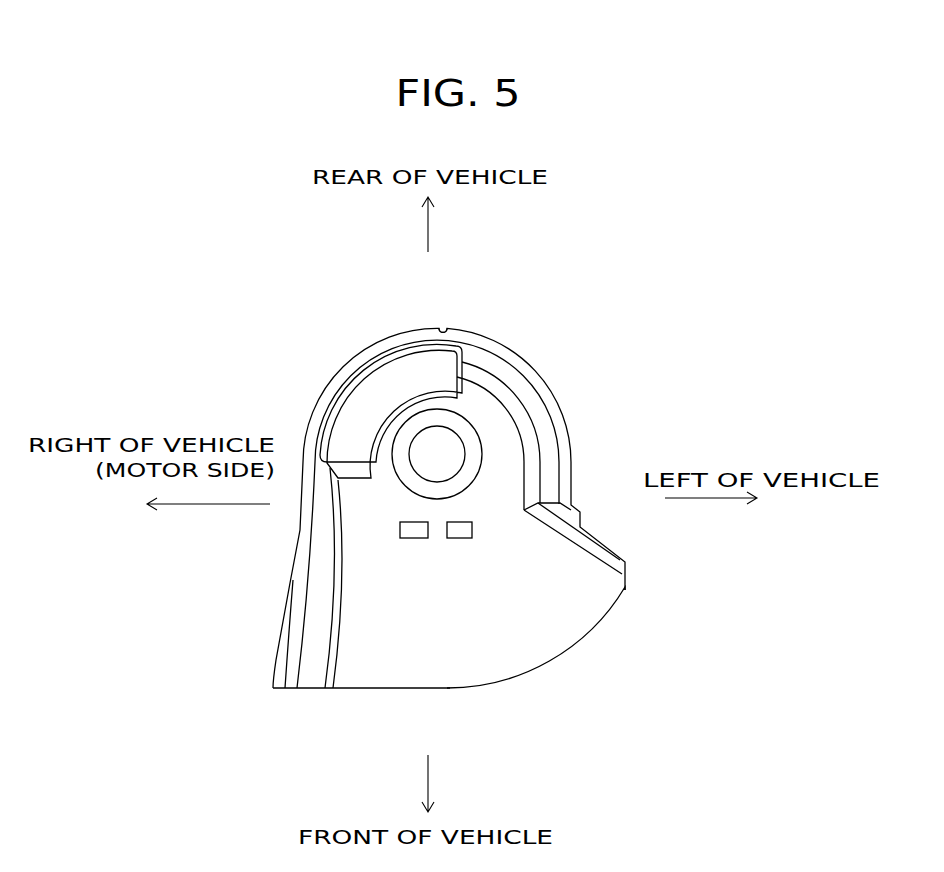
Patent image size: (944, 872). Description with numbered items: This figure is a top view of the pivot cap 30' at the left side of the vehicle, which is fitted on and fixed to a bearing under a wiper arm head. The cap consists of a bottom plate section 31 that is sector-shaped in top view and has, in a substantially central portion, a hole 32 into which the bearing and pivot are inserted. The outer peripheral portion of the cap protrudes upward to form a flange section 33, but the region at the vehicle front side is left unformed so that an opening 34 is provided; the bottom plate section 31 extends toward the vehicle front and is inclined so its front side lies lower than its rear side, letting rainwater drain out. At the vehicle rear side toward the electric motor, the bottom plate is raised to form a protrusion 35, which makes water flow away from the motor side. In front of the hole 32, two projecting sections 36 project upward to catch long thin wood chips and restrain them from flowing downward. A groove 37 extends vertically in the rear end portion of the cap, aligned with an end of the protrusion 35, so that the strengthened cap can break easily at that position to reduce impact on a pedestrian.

The pivot cap 30' is at (449, 464).
The bottom plate section 31 is at (576, 607).
The hole 32 is at (452, 436).
The flange section 33 is at (570, 417).
The opening 34 is at (488, 690).
The protrusion 35 is at (383, 385).
The projecting section 36 is at (460, 538).
The groove 37 is at (446, 329).